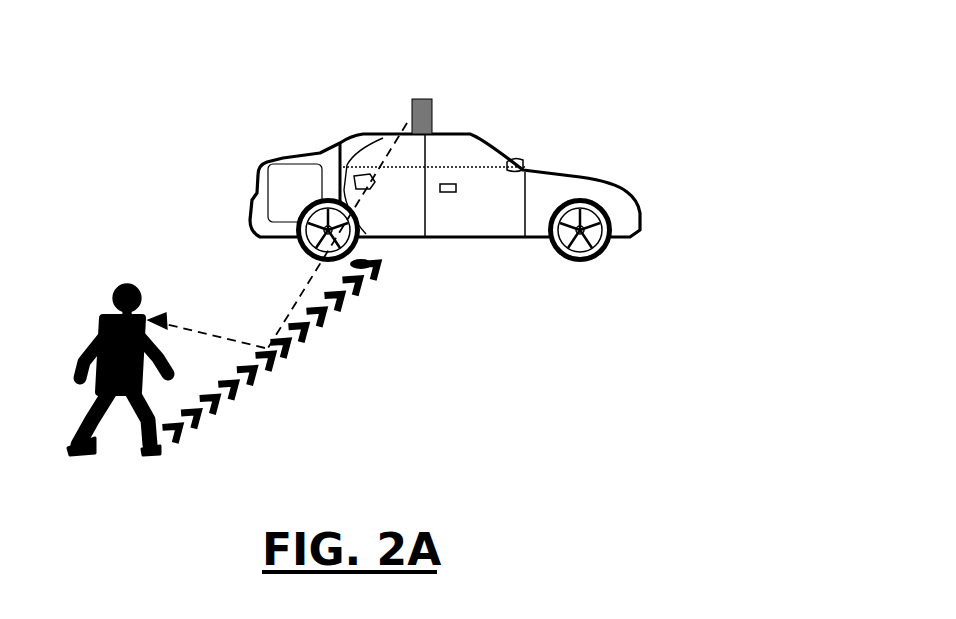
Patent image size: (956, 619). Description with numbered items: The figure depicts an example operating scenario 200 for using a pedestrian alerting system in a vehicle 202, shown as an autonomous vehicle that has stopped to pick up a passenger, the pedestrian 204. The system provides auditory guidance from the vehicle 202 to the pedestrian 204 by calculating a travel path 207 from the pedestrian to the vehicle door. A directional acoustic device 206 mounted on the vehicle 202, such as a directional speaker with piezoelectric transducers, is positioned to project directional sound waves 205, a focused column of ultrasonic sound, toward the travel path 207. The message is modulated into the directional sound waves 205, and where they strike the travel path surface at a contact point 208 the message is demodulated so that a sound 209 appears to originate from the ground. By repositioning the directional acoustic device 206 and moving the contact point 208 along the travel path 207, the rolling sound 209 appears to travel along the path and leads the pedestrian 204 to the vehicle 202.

The operating scenario 200 is at (553, 57).
The vehicle 202 is at (250, 205).
The pedestrian 204 is at (112, 369).
The directional sound waves 205 is at (334, 235).
The directional acoustic device 206 is at (409, 90).
The travel path 207 is at (328, 314).
The contact point 208 is at (248, 394).
The sound 209 is at (206, 316).